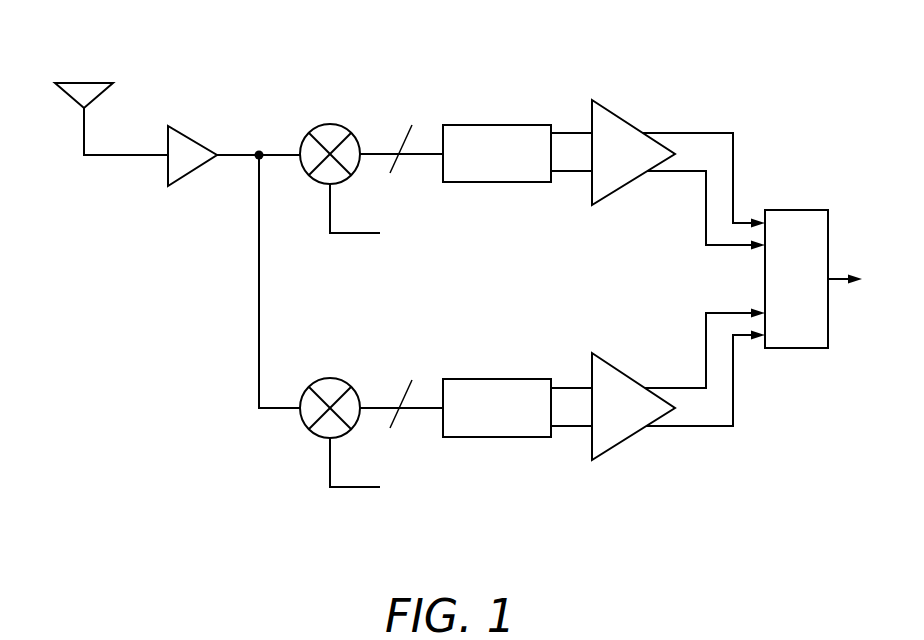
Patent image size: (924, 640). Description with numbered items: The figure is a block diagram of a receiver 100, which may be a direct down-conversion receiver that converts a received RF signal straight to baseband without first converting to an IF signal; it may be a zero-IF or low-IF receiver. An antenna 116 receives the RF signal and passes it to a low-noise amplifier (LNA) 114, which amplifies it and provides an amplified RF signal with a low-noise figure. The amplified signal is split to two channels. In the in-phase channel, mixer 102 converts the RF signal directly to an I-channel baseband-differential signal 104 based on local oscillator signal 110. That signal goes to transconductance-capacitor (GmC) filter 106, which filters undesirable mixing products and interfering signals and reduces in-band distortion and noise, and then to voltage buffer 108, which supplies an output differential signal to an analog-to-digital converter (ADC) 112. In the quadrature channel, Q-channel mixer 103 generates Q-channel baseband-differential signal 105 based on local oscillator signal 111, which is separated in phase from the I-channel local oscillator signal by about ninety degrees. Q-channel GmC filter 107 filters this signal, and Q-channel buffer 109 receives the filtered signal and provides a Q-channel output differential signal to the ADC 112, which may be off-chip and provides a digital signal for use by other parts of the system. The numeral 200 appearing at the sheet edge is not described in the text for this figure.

The receiver 100 is at (806, 75).
The mixer 102 is at (340, 123).
The Q-channel mixer 103 is at (340, 378).
The baseband-differential signal 104 is at (378, 155).
The Q-channel baseband-differential signal 105 is at (378, 410).
The transconductance-capacitor (GmC) filter 106 is at (533, 123).
The Q-channel GmC filter 107 is at (533, 376).
The voltage buffer 108 is at (636, 123).
The Q-channel buffer 109 is at (636, 376).
The local oscillator signal 110 is at (355, 235).
The local oscillator signal 111 is at (355, 489).
The analog-to-digital converter (ADC) 112 is at (813, 208).
The low-noise amplifier (LNA) 114 is at (197, 131).
The antenna 116 is at (85, 129).
The transmitter (FIG. 2 label, partially visible) 200 is at (808, 638).